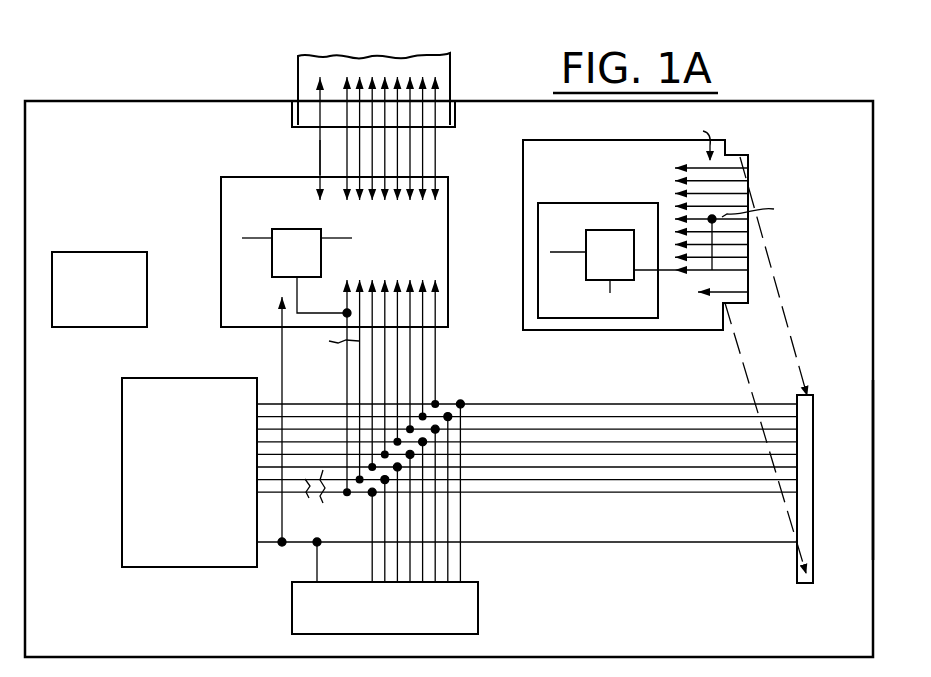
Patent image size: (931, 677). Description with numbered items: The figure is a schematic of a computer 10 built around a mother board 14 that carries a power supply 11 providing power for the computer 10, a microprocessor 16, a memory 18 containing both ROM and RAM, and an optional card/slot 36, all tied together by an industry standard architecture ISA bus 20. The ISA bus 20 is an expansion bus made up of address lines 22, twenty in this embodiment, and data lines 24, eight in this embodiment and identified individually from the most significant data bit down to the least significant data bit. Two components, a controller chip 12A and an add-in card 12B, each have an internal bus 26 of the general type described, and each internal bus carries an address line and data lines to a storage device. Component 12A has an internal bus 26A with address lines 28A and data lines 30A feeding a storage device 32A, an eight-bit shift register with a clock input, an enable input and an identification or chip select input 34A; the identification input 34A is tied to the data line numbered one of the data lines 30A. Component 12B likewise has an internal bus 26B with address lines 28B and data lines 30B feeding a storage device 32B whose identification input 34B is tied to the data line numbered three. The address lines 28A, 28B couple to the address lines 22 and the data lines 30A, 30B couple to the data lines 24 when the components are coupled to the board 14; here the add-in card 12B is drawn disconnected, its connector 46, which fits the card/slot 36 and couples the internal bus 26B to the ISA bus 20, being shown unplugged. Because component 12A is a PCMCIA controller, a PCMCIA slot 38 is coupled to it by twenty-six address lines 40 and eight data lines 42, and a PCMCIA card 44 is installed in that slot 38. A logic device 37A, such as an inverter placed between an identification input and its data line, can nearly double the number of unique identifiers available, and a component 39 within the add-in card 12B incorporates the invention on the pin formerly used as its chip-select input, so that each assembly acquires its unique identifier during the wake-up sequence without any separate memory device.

The computer 10 is at (888, 297).
The power supply 11 is at (99, 289).
The component 12A is at (270, 203).
The component 12B is at (580, 168).
The mother board 14 is at (873, 448).
The microprocessor 16 is at (121, 445).
The memory 18 is at (478, 608).
The ISA bus 20 is at (660, 404).
The address lines 22 is at (302, 548).
The data lines 24 is at (228, 400).
The internal bus 26 is at (323, 147).
The internal bus 26A is at (380, 280).
The internal bus 26B is at (673, 198).
The address lines 28A is at (282, 318).
The address lines 28B is at (712, 295).
The data lines 30A is at (443, 318).
The data lines 30B is at (687, 138).
The storage device 32A is at (272, 268).
The storage device 32B is at (586, 276).
The identification input 34A is at (297, 286).
The identification input 34B is at (646, 268).
The card/slot 36 is at (797, 563).
The logic device 37A is at (688, 274).
The PCMCIA slot 38 is at (455, 120).
The component 39 is at (550, 318).
The address lines 40 is at (318, 137).
The data lines 42 is at (440, 152).
The PCMCIA card 44 is at (450, 68).
The connector 46 is at (742, 155).